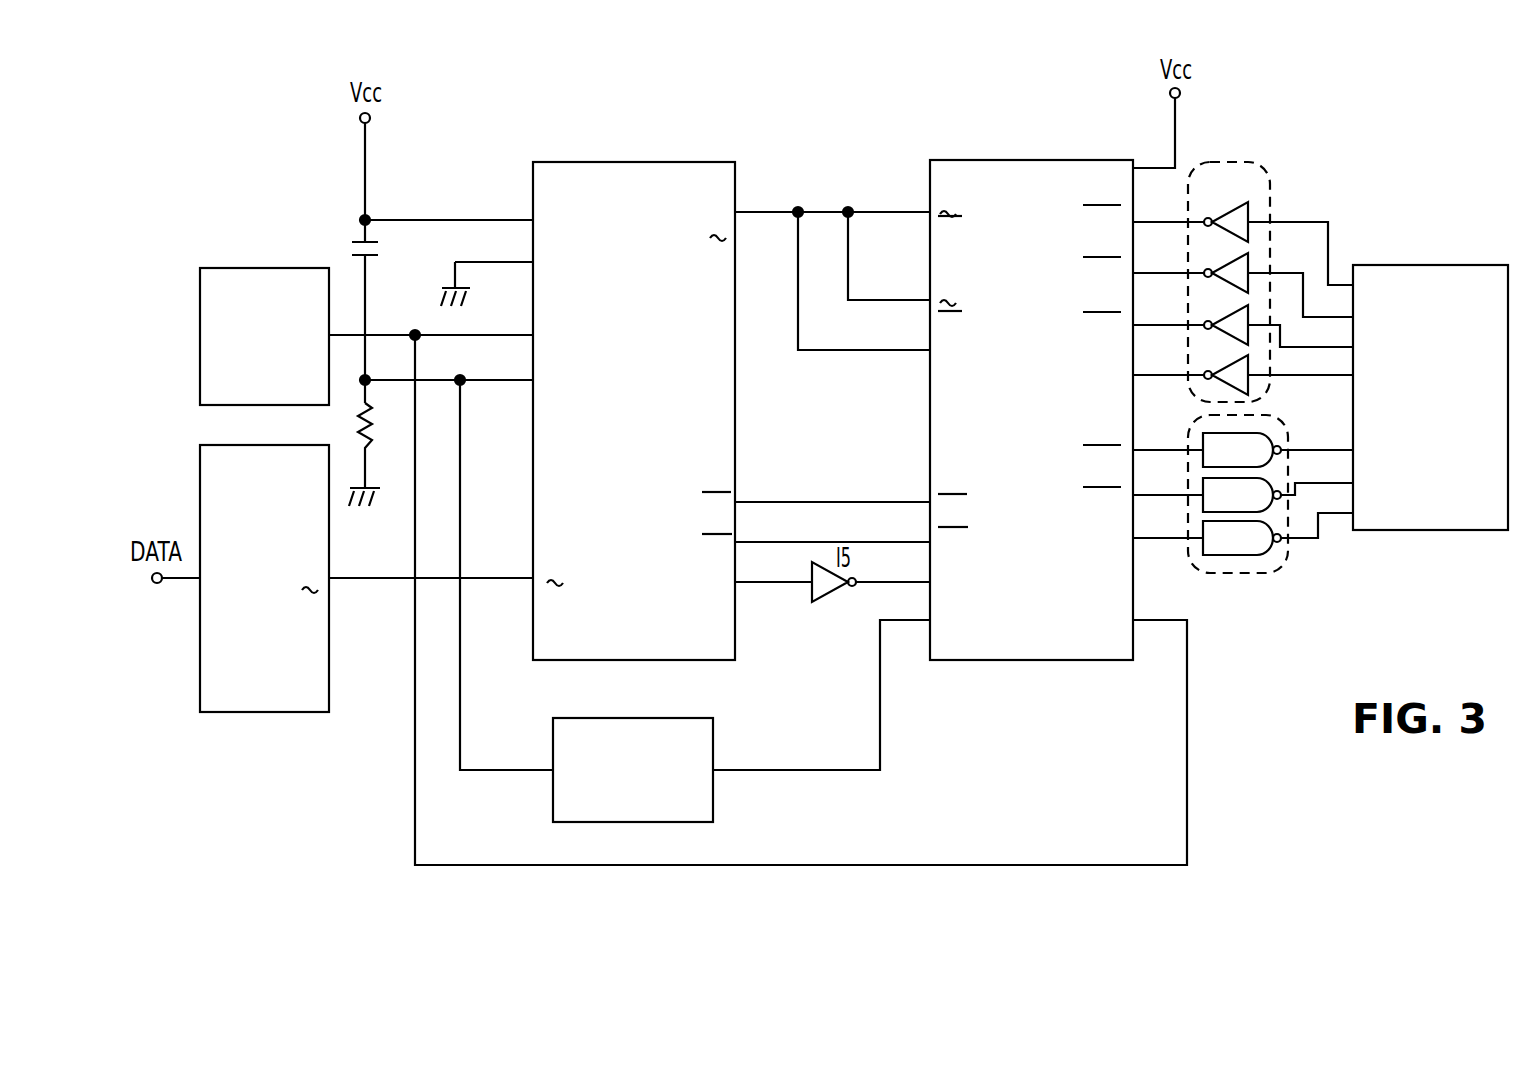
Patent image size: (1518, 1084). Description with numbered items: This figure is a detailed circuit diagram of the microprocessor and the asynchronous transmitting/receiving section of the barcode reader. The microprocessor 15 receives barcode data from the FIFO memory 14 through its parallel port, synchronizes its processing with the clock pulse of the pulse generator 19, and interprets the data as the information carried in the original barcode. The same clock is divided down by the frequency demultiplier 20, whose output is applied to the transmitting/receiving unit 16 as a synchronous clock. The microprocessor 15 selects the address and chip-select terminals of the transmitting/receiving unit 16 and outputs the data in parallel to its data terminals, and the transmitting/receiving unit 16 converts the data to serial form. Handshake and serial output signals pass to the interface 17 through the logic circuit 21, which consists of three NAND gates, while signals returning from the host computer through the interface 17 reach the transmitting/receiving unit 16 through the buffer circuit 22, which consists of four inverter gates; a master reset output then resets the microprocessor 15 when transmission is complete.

The FIFO memory 14 is at (247, 712).
The microprocessor 15 is at (610, 162).
The transmitting/receiving unit 16 is at (1035, 160).
The interface 17 is at (1429, 265).
The pulse generator 19 is at (263, 268).
The frequency demultiplier 20 is at (715, 738).
The logic circuit 21 is at (1217, 573).
The buffer circuit 22 is at (1237, 162).